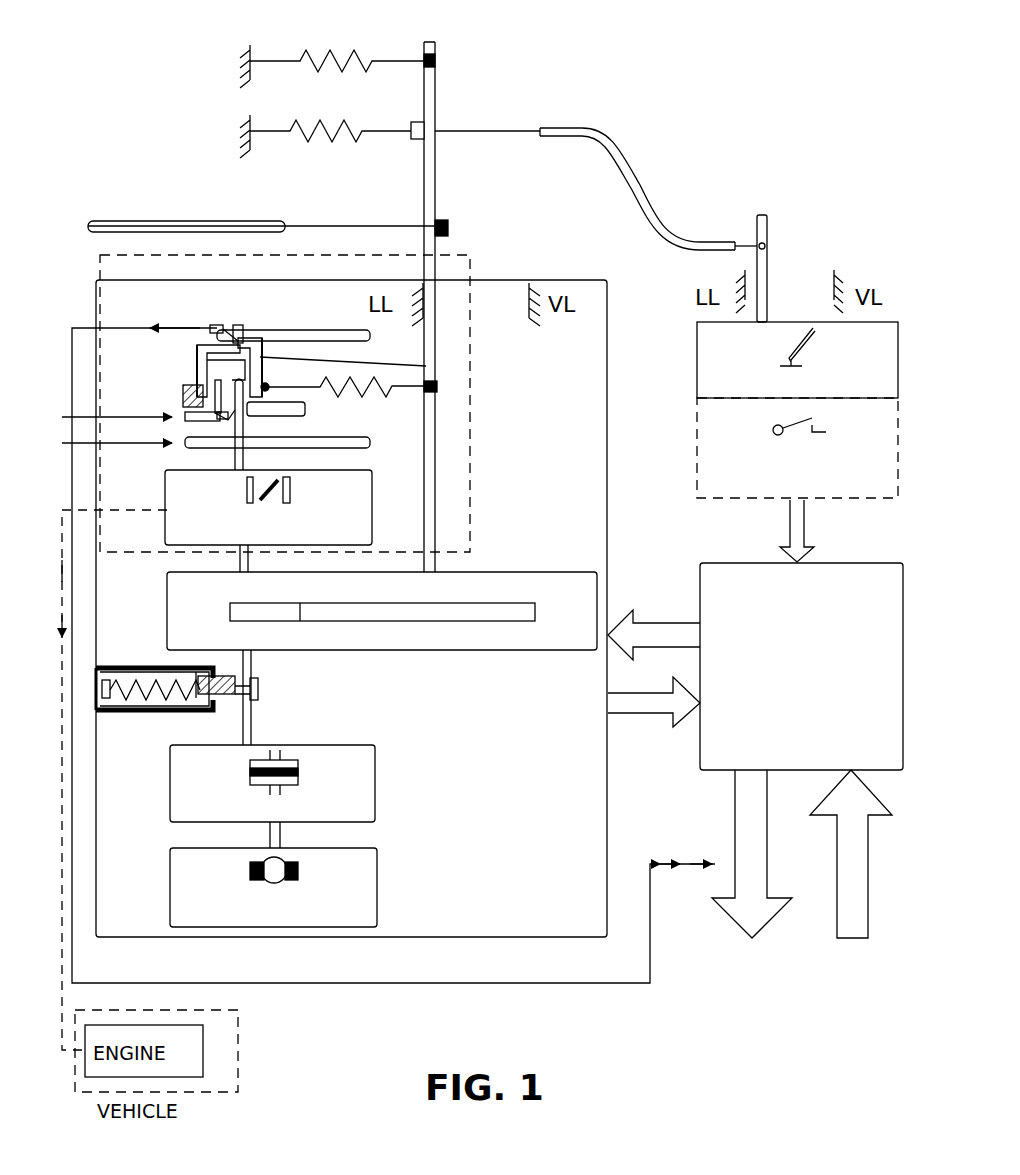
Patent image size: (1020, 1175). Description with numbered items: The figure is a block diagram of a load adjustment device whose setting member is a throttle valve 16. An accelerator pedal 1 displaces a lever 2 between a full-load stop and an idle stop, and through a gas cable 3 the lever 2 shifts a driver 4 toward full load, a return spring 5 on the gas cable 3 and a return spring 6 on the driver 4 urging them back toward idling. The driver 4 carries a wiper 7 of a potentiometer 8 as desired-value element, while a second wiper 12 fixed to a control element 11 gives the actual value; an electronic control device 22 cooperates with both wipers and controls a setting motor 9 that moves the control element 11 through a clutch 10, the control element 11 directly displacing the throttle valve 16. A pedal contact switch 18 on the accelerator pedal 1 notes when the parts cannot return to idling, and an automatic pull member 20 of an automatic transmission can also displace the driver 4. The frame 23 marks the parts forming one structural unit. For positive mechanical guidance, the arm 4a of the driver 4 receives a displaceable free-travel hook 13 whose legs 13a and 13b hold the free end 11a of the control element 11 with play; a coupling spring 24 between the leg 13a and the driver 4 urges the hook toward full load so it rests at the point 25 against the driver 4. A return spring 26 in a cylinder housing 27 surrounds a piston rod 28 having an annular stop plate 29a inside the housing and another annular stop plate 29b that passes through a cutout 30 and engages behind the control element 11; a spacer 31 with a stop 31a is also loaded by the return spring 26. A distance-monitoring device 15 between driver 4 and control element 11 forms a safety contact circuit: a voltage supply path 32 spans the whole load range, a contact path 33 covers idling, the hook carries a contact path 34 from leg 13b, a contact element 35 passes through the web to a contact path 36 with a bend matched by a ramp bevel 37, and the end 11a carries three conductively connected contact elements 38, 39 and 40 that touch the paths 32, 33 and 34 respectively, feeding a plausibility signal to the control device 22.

The accelerator pedal 1 is at (700, 347).
The lever 2 is at (768, 280).
The gas cable 3 is at (636, 200).
The driver 4 is at (455, 338).
The arm of the driver 4a is at (392, 362).
The return spring 5 is at (362, 130).
The return spring 6 is at (372, 60).
The wiper 7 is at (478, 640).
The potentiometer 8 is at (487, 562).
The setting motor 9 is at (377, 887).
The clutch 10 is at (376, 792).
The control element 11 is at (251, 728).
The free end of the control element 11a is at (299, 412).
The second wiper 12 is at (262, 640).
The free-travel hook 13 is at (188, 350).
The leg of the free-travel hook 13a is at (266, 378).
The leg of the free-travel hook 13b is at (200, 372).
The distance-monitoring device 15 is at (178, 398).
The throttle valve 16 is at (372, 490).
The pedal contact switch 18 is at (697, 470).
The automatic pull member 20 is at (238, 221).
The electronic control device 22 is at (722, 776).
The frame 23 is at (608, 415).
The coupling spring 24 is at (344, 408).
The point 25 is at (268, 357).
The return spring 26 is at (156, 708).
The cylinder housing 27 is at (160, 668).
The piston rod 28 is at (133, 686).
The annular stop plate 29a is at (106, 706).
The annular stop plate 29b is at (261, 689).
The cutout 30 is at (240, 700).
The spacer 31 is at (232, 683).
The stop 31a is at (200, 702).
The voltage supply path 32 is at (188, 450).
The contact path 33 is at (186, 420).
The contact path 34 is at (212, 350).
The contact element 35 is at (224, 328).
The contact path 36 is at (296, 343).
The ramp bevel 37 is at (218, 408).
The contact element 38 is at (224, 420).
The contact element 39 is at (216, 455).
The contact element 40 is at (250, 326).